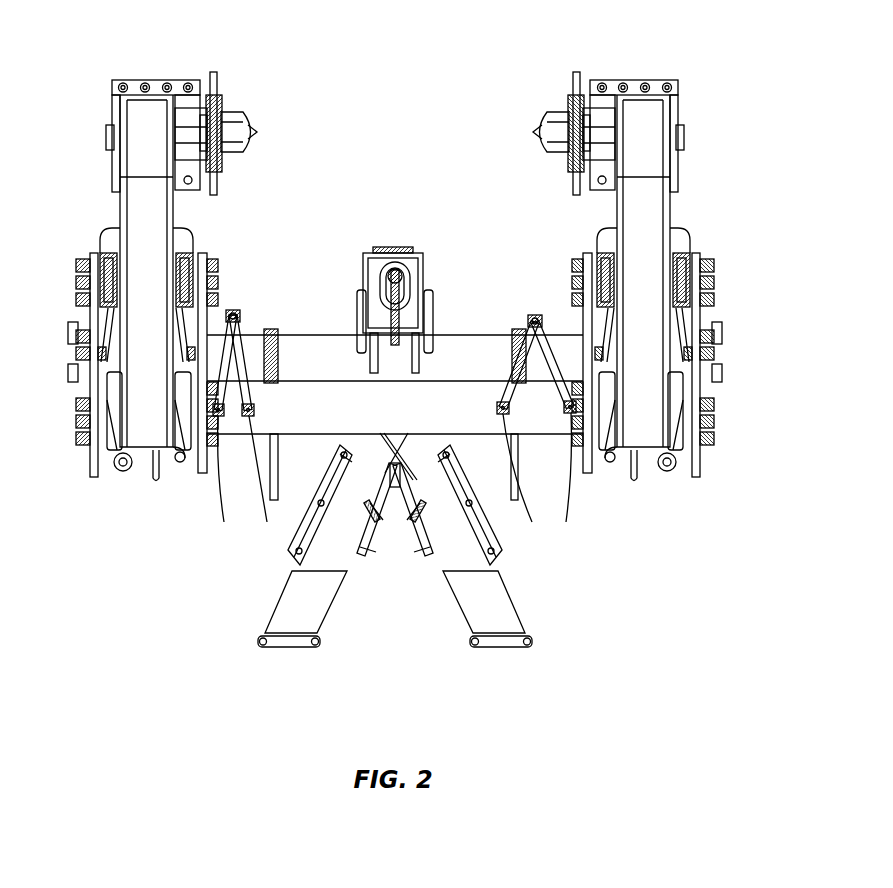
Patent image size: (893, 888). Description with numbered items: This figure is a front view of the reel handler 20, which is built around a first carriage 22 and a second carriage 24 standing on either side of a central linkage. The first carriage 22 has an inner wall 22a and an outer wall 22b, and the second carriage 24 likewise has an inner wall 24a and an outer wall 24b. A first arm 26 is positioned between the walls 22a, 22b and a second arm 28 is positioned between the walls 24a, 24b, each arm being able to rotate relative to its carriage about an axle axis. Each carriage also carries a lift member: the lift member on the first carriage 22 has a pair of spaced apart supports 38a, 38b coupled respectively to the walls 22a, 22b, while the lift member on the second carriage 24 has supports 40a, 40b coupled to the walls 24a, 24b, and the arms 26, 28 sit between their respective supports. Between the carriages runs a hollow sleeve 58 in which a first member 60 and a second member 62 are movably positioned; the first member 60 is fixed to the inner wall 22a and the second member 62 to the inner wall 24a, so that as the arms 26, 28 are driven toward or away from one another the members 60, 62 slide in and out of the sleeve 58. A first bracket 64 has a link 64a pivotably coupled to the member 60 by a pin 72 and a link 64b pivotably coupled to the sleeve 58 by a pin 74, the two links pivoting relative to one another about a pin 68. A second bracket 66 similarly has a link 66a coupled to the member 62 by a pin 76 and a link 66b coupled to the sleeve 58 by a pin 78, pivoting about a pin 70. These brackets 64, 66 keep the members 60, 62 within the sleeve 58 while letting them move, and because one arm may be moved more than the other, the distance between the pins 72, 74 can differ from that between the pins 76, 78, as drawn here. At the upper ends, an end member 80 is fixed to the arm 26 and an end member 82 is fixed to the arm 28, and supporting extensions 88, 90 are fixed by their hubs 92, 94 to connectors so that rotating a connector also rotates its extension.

The reel handler 20 is at (744, 136).
The first carriage 22 is at (655, 390).
The inner wall 22a is at (590, 473).
The outer wall 22b is at (705, 463).
The second carriage 24 is at (131, 389).
The inner wall 24a is at (198, 473).
The outer wall 24b is at (80, 463).
The first arm 26 is at (652, 362).
The second arm 28 is at (138, 362).
The support 38a is at (606, 250).
The support 38b is at (684, 250).
The support 40a is at (190, 250).
The support 40b is at (108, 250).
The hollow sleeve 58 is at (346, 400).
The first member 60 is at (542, 476).
The second member 62 is at (244, 478).
The first bracket 64 is at (515, 322).
The link 64a is at (556, 362).
The link 64b is at (507, 352).
The second bracket 66 is at (274, 323).
The link 66a is at (221, 358).
The link 66b is at (242, 362).
The pin 68 is at (531, 318).
The pin 70 is at (238, 316).
The pin 72 is at (582, 437).
The pin 74 is at (505, 422).
The pin 76 is at (218, 416).
The pin 78 is at (249, 416).
The end member 80 is at (648, 123).
The end member 82 is at (142, 123).
The extension 88 is at (578, 75).
The extension 90 is at (213, 72).
The hub 92 is at (544, 106).
The hub 94 is at (248, 106).